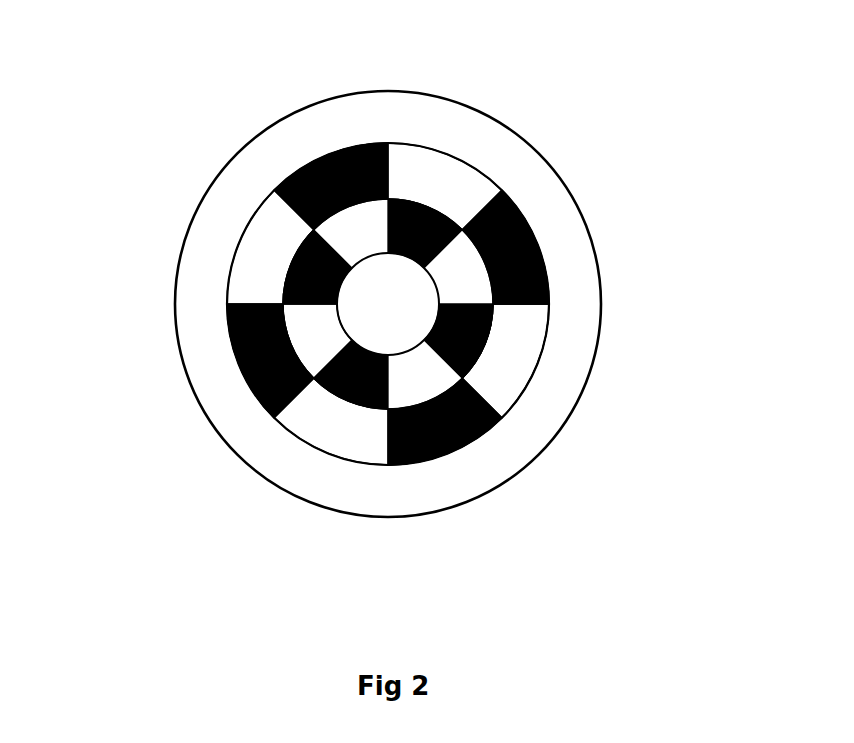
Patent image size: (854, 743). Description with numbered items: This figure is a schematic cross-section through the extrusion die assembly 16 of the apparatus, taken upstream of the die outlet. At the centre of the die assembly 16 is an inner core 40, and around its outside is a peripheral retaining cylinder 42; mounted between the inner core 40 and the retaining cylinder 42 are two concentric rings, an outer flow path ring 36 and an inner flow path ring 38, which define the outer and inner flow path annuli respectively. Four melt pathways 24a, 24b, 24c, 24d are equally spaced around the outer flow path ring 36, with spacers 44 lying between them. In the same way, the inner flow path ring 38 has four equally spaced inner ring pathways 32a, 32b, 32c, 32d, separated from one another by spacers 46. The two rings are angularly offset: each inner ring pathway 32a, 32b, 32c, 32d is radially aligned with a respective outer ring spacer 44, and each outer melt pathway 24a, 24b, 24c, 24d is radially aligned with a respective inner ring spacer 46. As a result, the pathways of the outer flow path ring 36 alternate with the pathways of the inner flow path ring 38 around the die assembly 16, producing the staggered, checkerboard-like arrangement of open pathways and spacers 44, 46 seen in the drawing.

The die assembly 16 is at (566, 161).
The melt pathway 24a is at (525, 341).
The melt pathway 24b is at (420, 170).
The melt pathway 24c is at (268, 223).
The melt pathway 24d is at (350, 445).
The inner ring pathway 32a is at (457, 270).
The inner ring pathway 32b is at (365, 235).
The inner ring pathway 32c is at (305, 313).
The inner ring pathway 32d is at (399, 385).
The outer flow path ring 36 is at (498, 393).
The inner flow path ring 38 is at (312, 337).
The inner core 40 is at (388, 304).
The peripheral retaining cylinder 42 is at (575, 295).
The spacer 44 is at (303, 166).
The spacer 46 is at (443, 212).